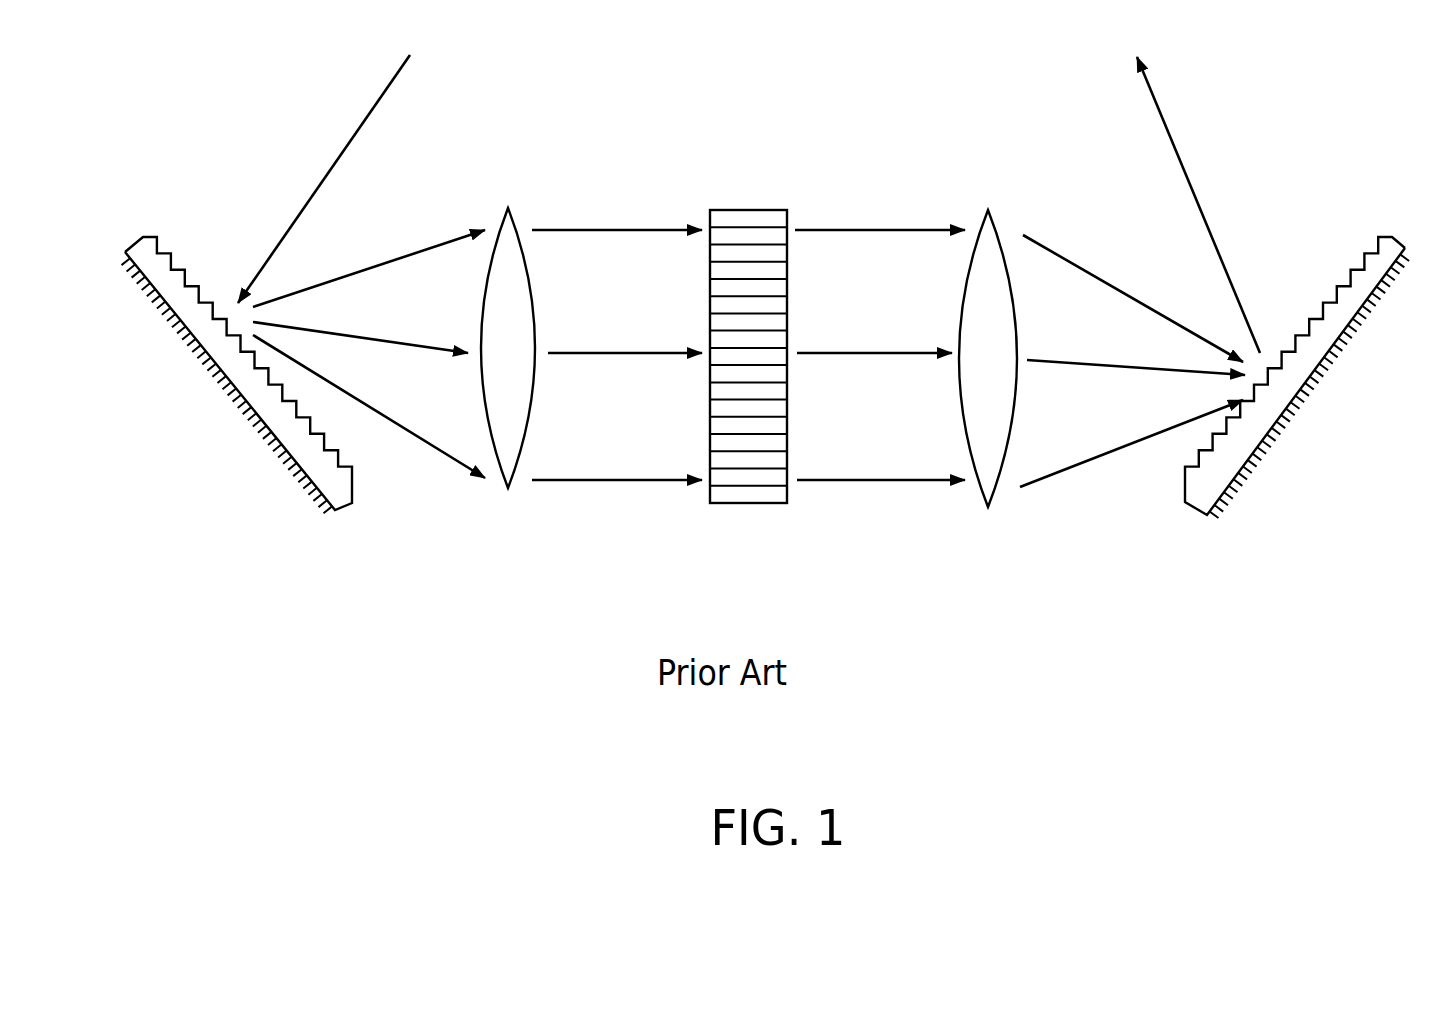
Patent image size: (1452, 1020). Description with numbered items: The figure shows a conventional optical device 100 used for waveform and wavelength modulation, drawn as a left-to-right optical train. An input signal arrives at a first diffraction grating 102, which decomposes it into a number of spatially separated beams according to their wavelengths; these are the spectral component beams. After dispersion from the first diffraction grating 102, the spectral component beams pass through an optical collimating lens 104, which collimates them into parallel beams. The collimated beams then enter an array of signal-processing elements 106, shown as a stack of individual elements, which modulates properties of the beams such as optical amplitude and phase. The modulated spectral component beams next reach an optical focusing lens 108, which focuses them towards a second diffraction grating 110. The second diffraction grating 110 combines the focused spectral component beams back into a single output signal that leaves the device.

The optical device 100 is at (243, 675).
The first diffraction grating 102 is at (137, 256).
The optical collimating lens 104 is at (508, 208).
The array of signal-processing elements 106 is at (742, 210).
The optical focusing lens 108 is at (988, 210).
The second diffraction grating 110 is at (1398, 252).